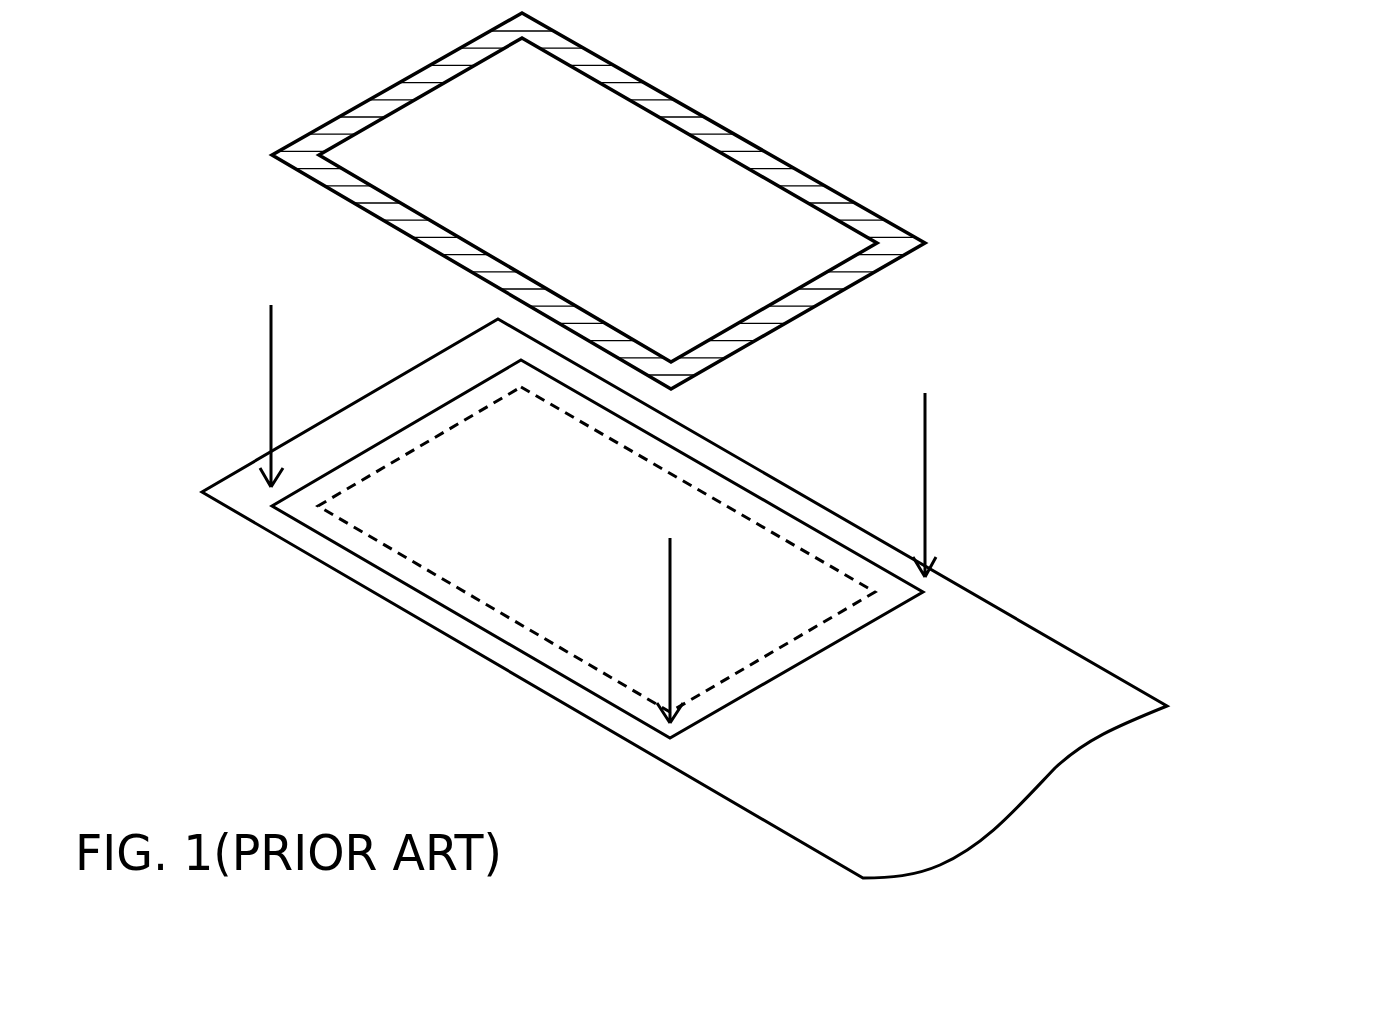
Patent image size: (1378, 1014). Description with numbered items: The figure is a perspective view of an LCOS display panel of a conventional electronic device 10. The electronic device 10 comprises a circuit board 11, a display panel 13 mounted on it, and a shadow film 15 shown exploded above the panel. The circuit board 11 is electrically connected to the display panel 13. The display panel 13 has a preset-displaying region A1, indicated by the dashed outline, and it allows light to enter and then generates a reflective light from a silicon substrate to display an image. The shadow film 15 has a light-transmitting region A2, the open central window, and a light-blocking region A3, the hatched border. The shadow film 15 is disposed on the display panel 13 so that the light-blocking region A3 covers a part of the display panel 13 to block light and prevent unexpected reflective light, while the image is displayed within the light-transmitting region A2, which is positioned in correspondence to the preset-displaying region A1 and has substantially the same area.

The electronic device 10 is at (773, 445).
The circuit board 11 is at (684, 598).
The display panel 13 is at (597, 549).
The shadow film 15 is at (629, 201).
The preset-displaying region A1 is at (727, 513).
The light-transmitting region A2 is at (686, 156).
The light-blocking region A3 is at (681, 96).